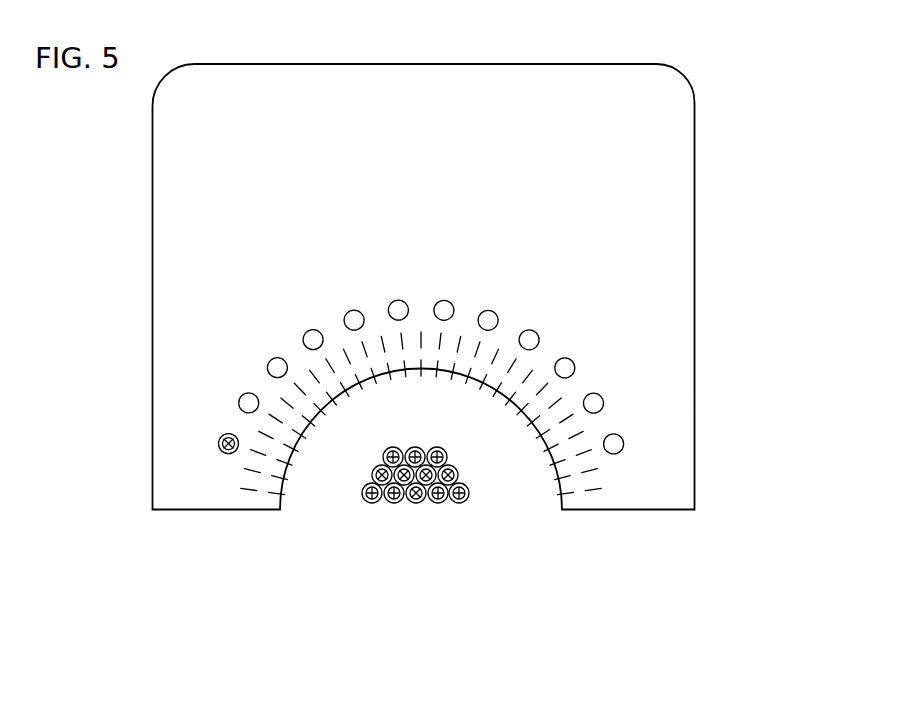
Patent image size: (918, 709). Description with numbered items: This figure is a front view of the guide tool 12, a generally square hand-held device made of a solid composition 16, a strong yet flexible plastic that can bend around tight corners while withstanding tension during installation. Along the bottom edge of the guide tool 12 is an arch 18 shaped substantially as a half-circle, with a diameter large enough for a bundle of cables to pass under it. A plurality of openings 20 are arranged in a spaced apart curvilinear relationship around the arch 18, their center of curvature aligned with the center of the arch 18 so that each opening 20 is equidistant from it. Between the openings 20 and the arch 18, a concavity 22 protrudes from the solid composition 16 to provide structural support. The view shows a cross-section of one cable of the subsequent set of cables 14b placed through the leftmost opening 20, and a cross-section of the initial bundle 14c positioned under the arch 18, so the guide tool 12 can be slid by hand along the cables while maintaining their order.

The guide tool 12 is at (429, 324).
The solid composition 16 is at (424, 298).
The arch 18 is at (556, 487).
The openings 20 is at (603, 402).
The concavity 22 is at (408, 357).
The subsequent set of cables 14b is at (218, 444).
The initial bundle 14c is at (460, 506).